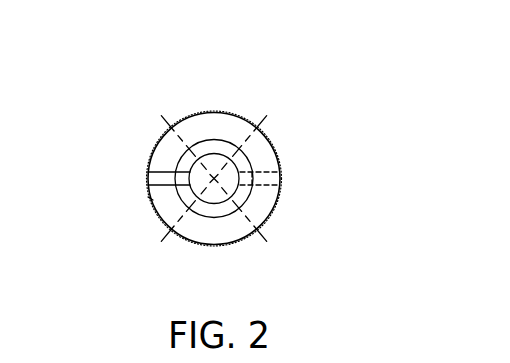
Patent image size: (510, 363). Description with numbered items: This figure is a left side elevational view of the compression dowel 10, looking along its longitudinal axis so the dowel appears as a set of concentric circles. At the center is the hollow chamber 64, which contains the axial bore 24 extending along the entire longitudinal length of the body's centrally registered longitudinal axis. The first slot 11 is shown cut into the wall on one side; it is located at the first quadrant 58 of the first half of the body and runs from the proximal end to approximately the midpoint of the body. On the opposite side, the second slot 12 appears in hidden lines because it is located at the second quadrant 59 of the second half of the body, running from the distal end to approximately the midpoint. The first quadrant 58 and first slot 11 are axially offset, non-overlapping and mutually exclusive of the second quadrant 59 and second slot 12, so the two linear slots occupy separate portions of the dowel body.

The compression dowel 10 is at (314, 111).
The first slot 11 is at (168, 185).
The second slot 12 is at (265, 178).
The axial bore 24 is at (213, 172).
The first quadrant 58 is at (153, 200).
The second quadrant 59 is at (278, 158).
The hollow chamber 64 is at (237, 194).